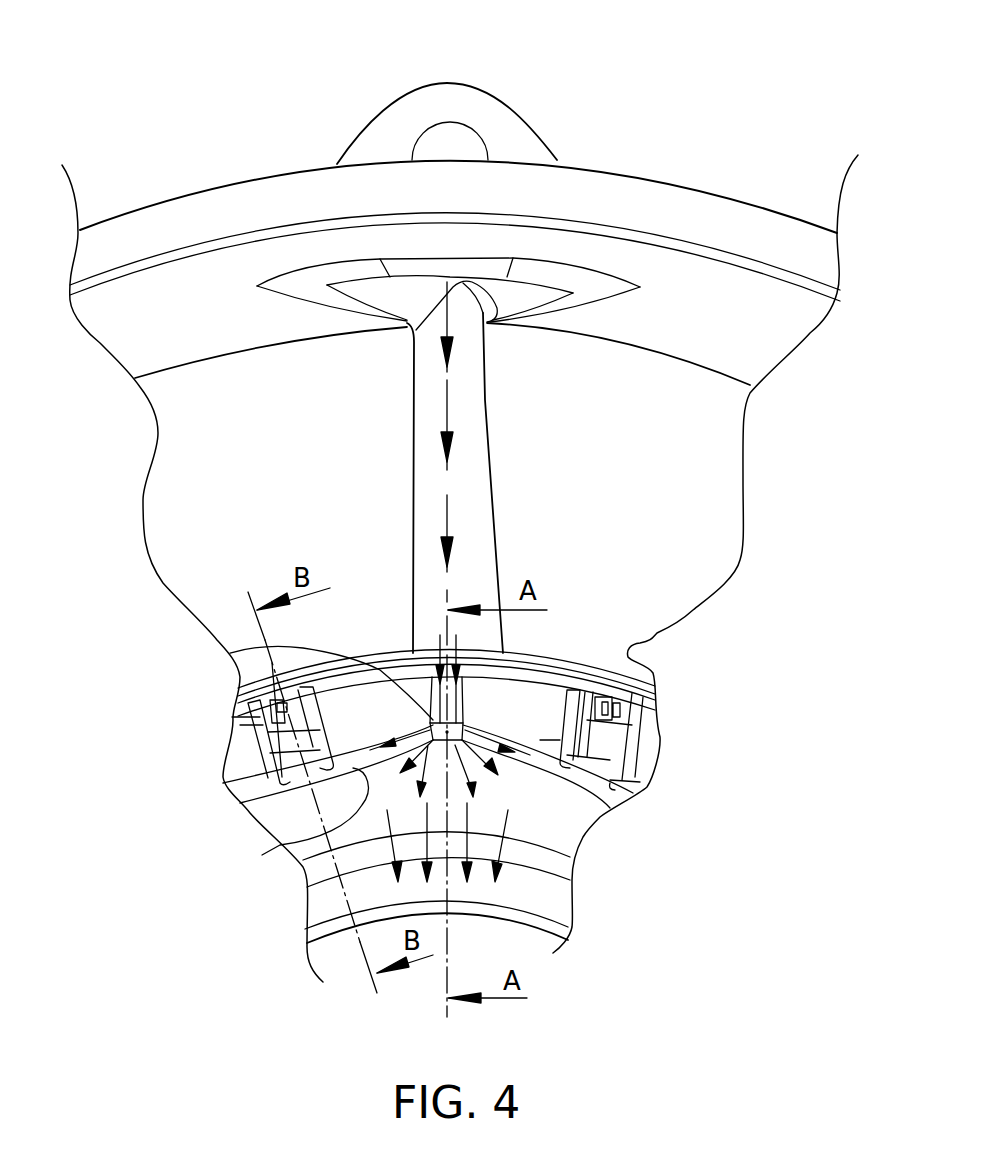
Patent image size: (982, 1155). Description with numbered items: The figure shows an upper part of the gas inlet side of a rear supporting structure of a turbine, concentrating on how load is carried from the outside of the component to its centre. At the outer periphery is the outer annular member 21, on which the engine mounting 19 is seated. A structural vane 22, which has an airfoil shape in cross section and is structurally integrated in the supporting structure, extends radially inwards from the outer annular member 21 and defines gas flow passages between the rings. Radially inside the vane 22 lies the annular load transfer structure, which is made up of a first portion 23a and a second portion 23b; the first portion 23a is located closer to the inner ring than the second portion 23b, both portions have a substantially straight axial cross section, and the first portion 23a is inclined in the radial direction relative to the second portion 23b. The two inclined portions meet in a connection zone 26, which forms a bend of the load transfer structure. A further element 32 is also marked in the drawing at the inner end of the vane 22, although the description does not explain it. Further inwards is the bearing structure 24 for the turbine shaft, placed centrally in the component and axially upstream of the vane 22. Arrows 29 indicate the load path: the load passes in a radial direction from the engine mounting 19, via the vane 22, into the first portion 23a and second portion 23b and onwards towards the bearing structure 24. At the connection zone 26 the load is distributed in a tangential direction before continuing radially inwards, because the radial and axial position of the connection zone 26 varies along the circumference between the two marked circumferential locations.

The engine mounting 19 is at (460, 103).
The outer annular member 21 is at (700, 287).
The structural vane 22 is at (423, 390).
The arrows 29 is at (447, 408).
The nozzle 32 is at (230, 653).
The first portion 23a is at (697, 700).
The second portion 23b is at (665, 800).
The bearing structure 24 is at (565, 932).
The connection zone 26 is at (262, 855).